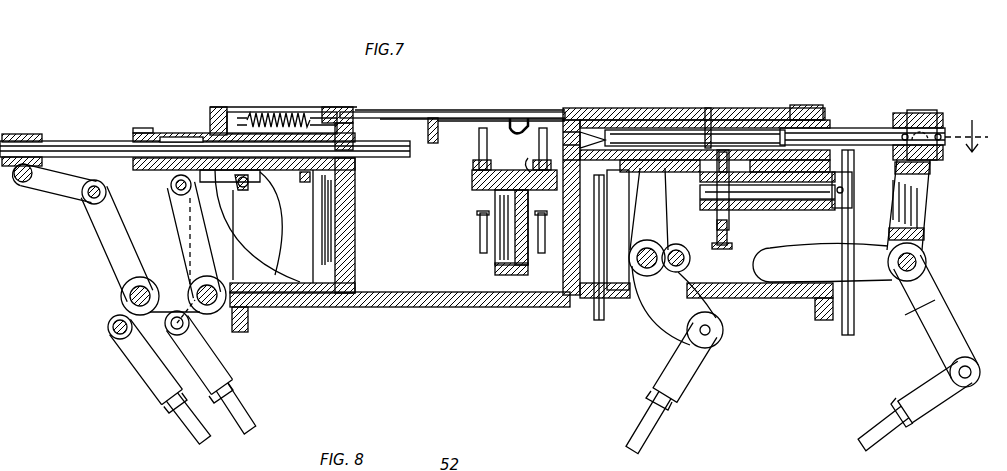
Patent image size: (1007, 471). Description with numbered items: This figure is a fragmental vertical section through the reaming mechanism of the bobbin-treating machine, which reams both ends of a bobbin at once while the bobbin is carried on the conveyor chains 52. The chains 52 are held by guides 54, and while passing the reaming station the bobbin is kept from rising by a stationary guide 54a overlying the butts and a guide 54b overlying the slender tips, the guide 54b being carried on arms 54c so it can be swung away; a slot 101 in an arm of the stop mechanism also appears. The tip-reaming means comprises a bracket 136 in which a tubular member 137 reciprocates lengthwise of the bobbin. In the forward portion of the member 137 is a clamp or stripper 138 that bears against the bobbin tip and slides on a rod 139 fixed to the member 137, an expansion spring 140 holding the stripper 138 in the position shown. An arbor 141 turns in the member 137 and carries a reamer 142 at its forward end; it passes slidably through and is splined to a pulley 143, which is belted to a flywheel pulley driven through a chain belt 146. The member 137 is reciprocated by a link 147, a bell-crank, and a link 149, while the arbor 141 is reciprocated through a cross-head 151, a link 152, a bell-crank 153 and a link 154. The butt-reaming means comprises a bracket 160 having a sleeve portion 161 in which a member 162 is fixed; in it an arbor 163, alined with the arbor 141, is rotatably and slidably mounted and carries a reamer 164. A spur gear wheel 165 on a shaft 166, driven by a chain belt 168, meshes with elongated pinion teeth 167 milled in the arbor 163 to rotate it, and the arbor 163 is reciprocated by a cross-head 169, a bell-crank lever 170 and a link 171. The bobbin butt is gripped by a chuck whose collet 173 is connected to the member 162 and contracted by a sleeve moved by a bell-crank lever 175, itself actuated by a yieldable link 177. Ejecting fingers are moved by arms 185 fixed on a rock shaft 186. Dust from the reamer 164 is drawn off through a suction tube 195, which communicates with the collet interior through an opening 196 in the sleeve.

The chains 52 is at (480, 150).
The guides 54 is at (525, 165).
The stationary guide 54a is at (517, 113).
The guide 54b is at (452, 115).
The arms 54c is at (410, 112).
The slot 101 is at (565, 198).
The bracket 136 is at (355, 213).
The tubular member 137 is at (248, 180).
The clamp or stripper 138 is at (358, 132).
The rod 139 is at (367, 114).
The expansion spring 140 is at (283, 112).
The arbor 141 is at (70, 148).
The reamer 142 is at (310, 173).
The pulley 143 is at (165, 133).
The chain belt 146 is at (187, 230).
The link 147 is at (215, 192).
The link 149 is at (262, 350).
The cross-head 151 is at (35, 124).
The link 152 is at (58, 187).
The bell-crank 153 is at (117, 253).
The link 154 is at (193, 413).
The bracket 160 is at (550, 296).
The sleeve portion 161 is at (737, 108).
The member 162 is at (795, 106).
The arbor 163 is at (857, 140).
The reamer 164 is at (607, 137).
The spur gear wheel 165 is at (700, 280).
The shaft 166 is at (770, 212).
The pinion teeth 167 is at (730, 160).
The chain belt 168 is at (847, 333).
The cross-head 169 is at (905, 130).
The bell-crank lever 170 is at (927, 214).
The link 171 is at (883, 423).
The collet 173 is at (575, 140).
The bell-crank lever 175 is at (648, 330).
The link 177 is at (650, 443).
The arms 185 is at (699, 190).
The rock shaft 186 is at (677, 247).
The suction tube 195 is at (595, 315).
The opening 196 is at (615, 188).